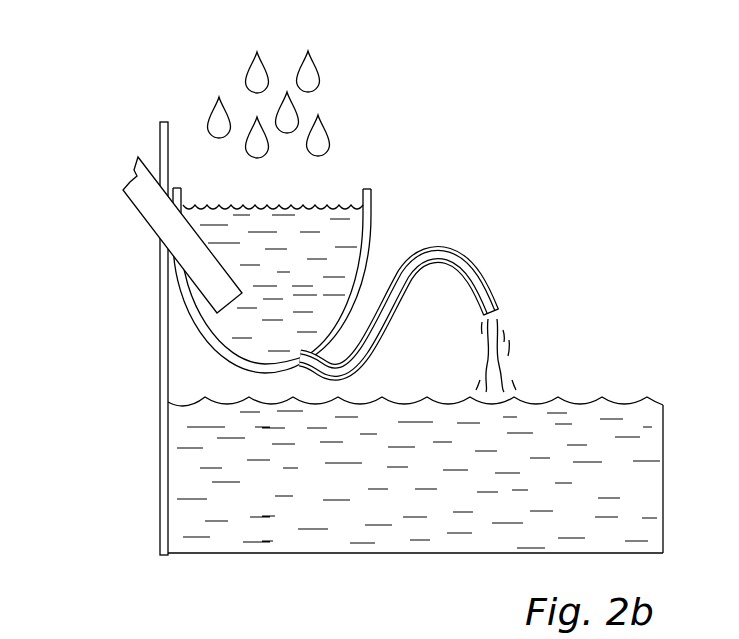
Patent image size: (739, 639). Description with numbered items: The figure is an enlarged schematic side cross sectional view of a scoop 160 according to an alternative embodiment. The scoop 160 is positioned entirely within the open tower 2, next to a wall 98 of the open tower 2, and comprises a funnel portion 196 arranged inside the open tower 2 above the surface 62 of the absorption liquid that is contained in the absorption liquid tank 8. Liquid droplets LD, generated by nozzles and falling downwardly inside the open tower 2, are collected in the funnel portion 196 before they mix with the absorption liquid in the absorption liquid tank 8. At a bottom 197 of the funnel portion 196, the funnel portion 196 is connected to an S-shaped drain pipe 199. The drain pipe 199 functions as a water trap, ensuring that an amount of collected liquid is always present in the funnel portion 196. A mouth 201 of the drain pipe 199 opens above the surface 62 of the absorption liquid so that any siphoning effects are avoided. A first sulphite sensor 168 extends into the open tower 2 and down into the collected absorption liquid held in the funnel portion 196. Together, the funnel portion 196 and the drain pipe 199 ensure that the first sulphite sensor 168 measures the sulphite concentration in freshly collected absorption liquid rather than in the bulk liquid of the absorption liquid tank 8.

The liquid droplets LD is at (313, 67).
The wall 98 is at (160, 143).
The open tower 2 is at (160, 388).
The absorption liquid tank 8 is at (160, 482).
The surface of absorption liquid 62 is at (580, 403).
The bottom of funnel portion 197 is at (237, 365).
The funnel portion 196 is at (373, 210).
The scoop 160 is at (403, 133).
The first sulphite sensor 168 is at (148, 217).
The drain pipe 199 is at (494, 283).
The mouth of drain pipe 201 is at (497, 316).